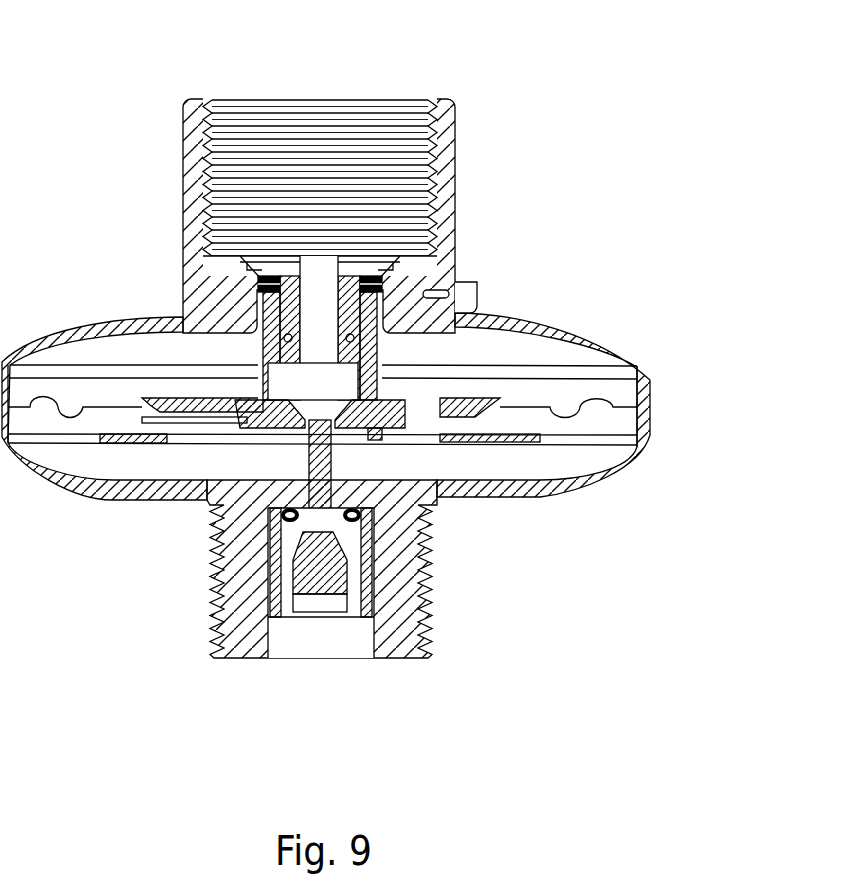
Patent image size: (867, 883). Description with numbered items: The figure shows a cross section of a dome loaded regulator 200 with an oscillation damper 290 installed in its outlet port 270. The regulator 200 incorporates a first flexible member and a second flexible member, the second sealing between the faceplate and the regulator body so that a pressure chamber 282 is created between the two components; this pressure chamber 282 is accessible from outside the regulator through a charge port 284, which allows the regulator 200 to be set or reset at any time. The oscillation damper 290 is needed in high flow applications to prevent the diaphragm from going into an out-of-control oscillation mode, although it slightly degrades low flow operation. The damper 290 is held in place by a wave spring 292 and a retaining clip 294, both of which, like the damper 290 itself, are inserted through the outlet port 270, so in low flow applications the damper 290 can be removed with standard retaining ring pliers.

The regulator 200 is at (376, 335).
The outlet port 270 is at (413, 128).
The pressure chamber 282 is at (573, 365).
The charge port 284 is at (479, 298).
The oscillation damper 290 is at (287, 298).
The wave spring 292 is at (370, 263).
The retaining clip 294 is at (368, 278).